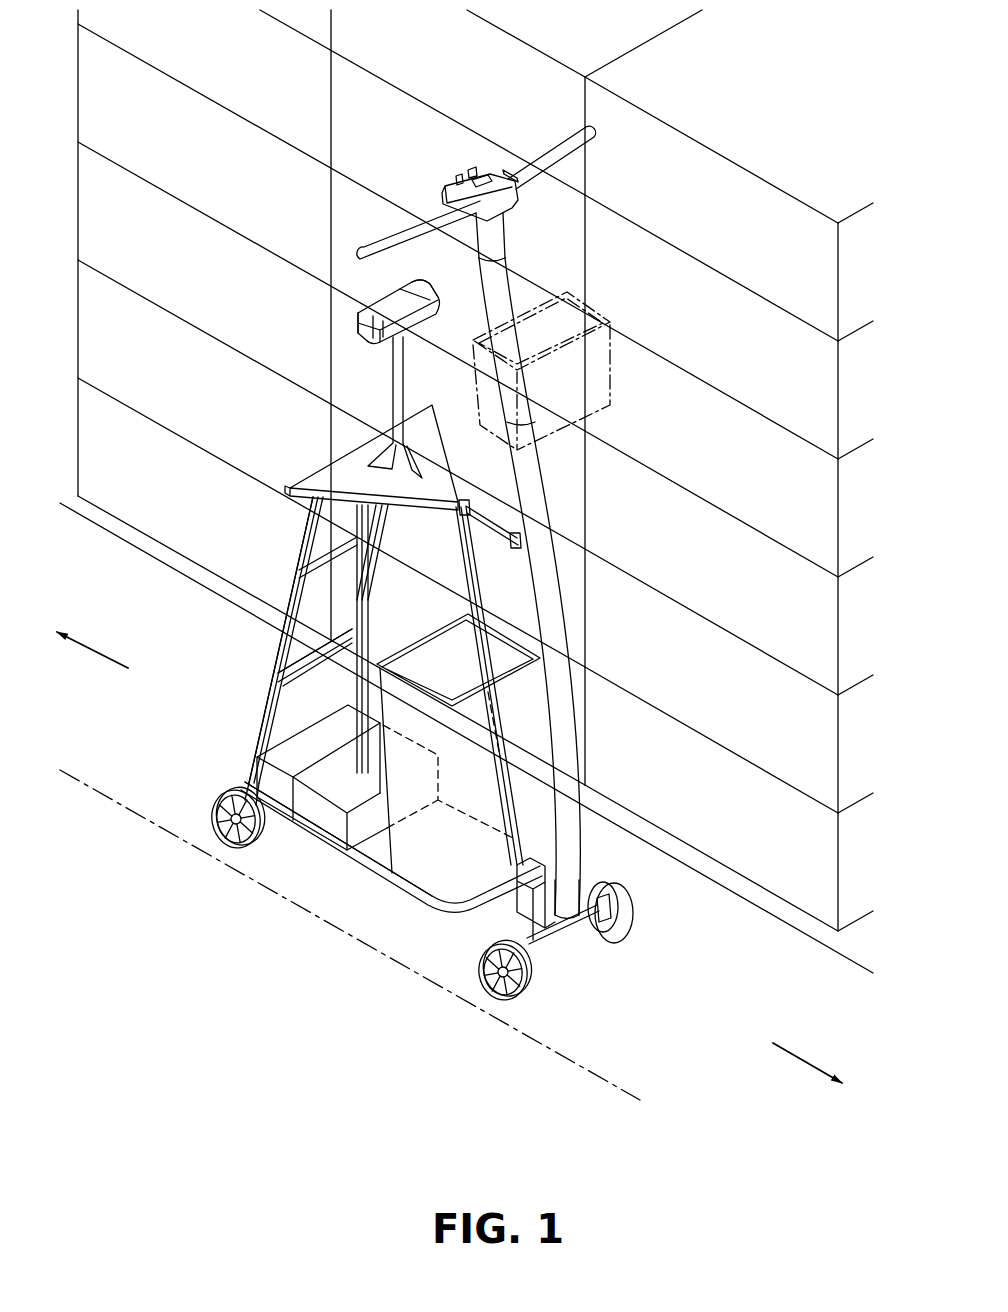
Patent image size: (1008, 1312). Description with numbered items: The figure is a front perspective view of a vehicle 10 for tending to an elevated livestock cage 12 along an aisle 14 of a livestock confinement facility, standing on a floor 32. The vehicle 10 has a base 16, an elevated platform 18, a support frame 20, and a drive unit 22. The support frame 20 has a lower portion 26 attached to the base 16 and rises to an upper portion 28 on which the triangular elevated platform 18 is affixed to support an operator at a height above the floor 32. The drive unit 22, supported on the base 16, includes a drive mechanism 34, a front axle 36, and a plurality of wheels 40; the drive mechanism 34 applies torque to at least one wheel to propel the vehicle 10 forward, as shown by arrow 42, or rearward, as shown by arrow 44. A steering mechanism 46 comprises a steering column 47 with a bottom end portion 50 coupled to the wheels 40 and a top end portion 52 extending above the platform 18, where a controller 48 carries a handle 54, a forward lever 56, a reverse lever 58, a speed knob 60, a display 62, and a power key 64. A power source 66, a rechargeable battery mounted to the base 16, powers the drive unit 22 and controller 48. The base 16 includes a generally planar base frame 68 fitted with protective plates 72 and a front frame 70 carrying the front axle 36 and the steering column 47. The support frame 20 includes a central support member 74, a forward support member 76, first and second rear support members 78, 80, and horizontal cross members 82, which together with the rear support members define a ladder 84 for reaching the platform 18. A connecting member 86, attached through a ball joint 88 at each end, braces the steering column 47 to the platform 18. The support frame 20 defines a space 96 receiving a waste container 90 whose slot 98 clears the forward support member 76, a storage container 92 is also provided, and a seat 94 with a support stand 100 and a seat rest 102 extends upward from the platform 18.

The vehicle 10 is at (632, 191).
The elevated livestock cage 12 is at (88, 62).
The aisle 14 is at (745, 887).
The base 16 is at (332, 858).
The elevated platform 18 is at (322, 478).
The support frame 20 is at (257, 562).
The drive unit 22 is at (247, 762).
The lower portion 26 is at (240, 773).
The upper portion 28 is at (300, 530).
The floor 32 is at (751, 1031).
The drive mechanism 34 is at (282, 752).
The front axle 36 is at (538, 945).
The wheels 40 is at (256, 840).
The arrow 42 is at (800, 1061).
The arrow 44 is at (96, 648).
The steering mechanism 46 is at (568, 508).
The steering column 47 is at (546, 500).
The controller 48 is at (520, 202).
The bottom end portion 50 is at (575, 864).
The top end portion 52 is at (500, 245).
The handle 54 is at (582, 133).
The forward lever 56 is at (436, 213).
The reverse lever 58 is at (510, 172).
The speed knob 60 is at (458, 175).
The display 62 is at (486, 176).
The power key 64 is at (472, 168).
The power source 66 is at (346, 794).
The base frame 68 is at (398, 880).
The front frame 70 is at (528, 924).
The protective plates 72 is at (324, 713).
The central support member 74 is at (368, 640).
The forward support member 76 is at (480, 597).
The first rear support member 78 is at (268, 690).
The second rear support member 80 is at (388, 533).
The horizontal cross members 82 is at (325, 553).
The ladder 84 is at (277, 633).
The connecting member 86 is at (490, 531).
The ball joint 88 is at (512, 534).
The waste container 90 is at (433, 885).
The storage container 92 is at (610, 380).
The seat 94 is at (352, 316).
The space 96 is at (437, 612).
The slot 98 is at (492, 716).
The support stand 100 is at (393, 388).
The seat rest 102 is at (418, 292).